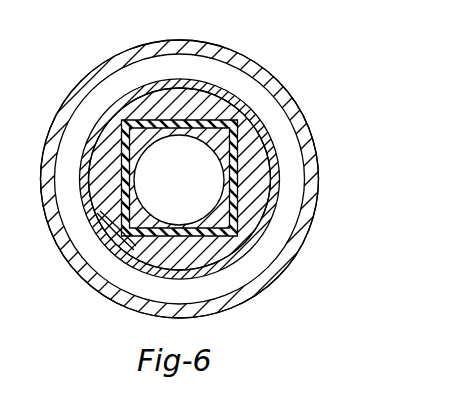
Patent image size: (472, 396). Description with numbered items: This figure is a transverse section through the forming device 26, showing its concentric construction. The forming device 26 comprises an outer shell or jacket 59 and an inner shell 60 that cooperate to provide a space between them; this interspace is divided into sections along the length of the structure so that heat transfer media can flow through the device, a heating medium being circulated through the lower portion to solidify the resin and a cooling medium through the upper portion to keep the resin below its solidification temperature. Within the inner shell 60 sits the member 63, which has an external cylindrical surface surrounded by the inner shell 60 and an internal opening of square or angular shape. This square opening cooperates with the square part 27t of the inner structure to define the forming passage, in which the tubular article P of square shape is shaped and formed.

The forming device 26 is at (272, 290).
The outer shell or jacket 59 is at (112, 62).
The inner shell 60 is at (242, 112).
The member 63 is at (262, 182).
The tubular article P is at (133, 240).
The bore 27t is at (213, 147).